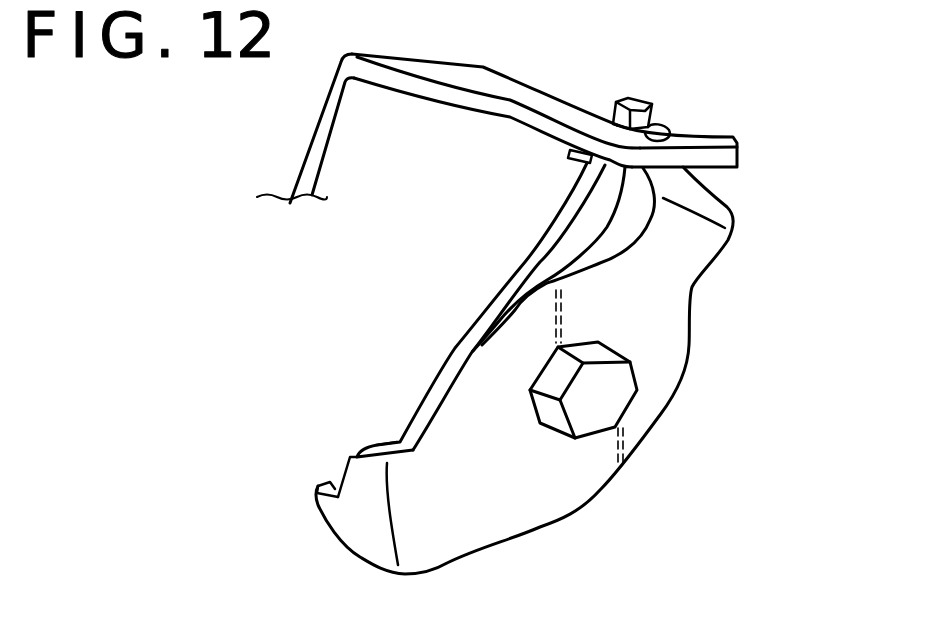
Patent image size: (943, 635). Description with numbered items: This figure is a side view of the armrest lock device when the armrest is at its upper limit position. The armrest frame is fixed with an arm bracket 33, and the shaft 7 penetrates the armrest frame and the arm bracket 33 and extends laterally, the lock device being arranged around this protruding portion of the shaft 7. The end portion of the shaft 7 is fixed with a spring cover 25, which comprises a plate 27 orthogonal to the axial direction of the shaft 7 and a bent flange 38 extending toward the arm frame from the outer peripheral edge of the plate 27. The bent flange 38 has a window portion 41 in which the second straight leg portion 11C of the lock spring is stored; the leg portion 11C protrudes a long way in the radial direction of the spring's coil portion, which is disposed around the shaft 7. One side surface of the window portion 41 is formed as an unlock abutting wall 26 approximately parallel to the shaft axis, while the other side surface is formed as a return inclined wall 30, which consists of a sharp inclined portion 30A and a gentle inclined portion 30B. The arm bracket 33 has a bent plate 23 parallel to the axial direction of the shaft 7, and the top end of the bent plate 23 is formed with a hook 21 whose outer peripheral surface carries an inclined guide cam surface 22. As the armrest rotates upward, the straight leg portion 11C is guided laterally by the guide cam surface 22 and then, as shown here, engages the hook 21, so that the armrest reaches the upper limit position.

The shaft 7 is at (623, 390).
The second straight leg portion 11C is at (632, 97).
The hook 21 is at (668, 129).
The inclined guide cam surface 22 is at (697, 127).
The bent plate 23 is at (485, 101).
The spring cover 25 is at (688, 374).
The unlock abutting wall 26 is at (572, 158).
The plate 27 is at (580, 477).
The return inclined wall 30 is at (349, 453).
The sharp inclined portion 30A is at (377, 443).
The gentle inclined portion 30B is at (347, 475).
The arm bracket 33 is at (303, 144).
The bent flange 38 is at (688, 182).
The window portion 41 is at (441, 331).